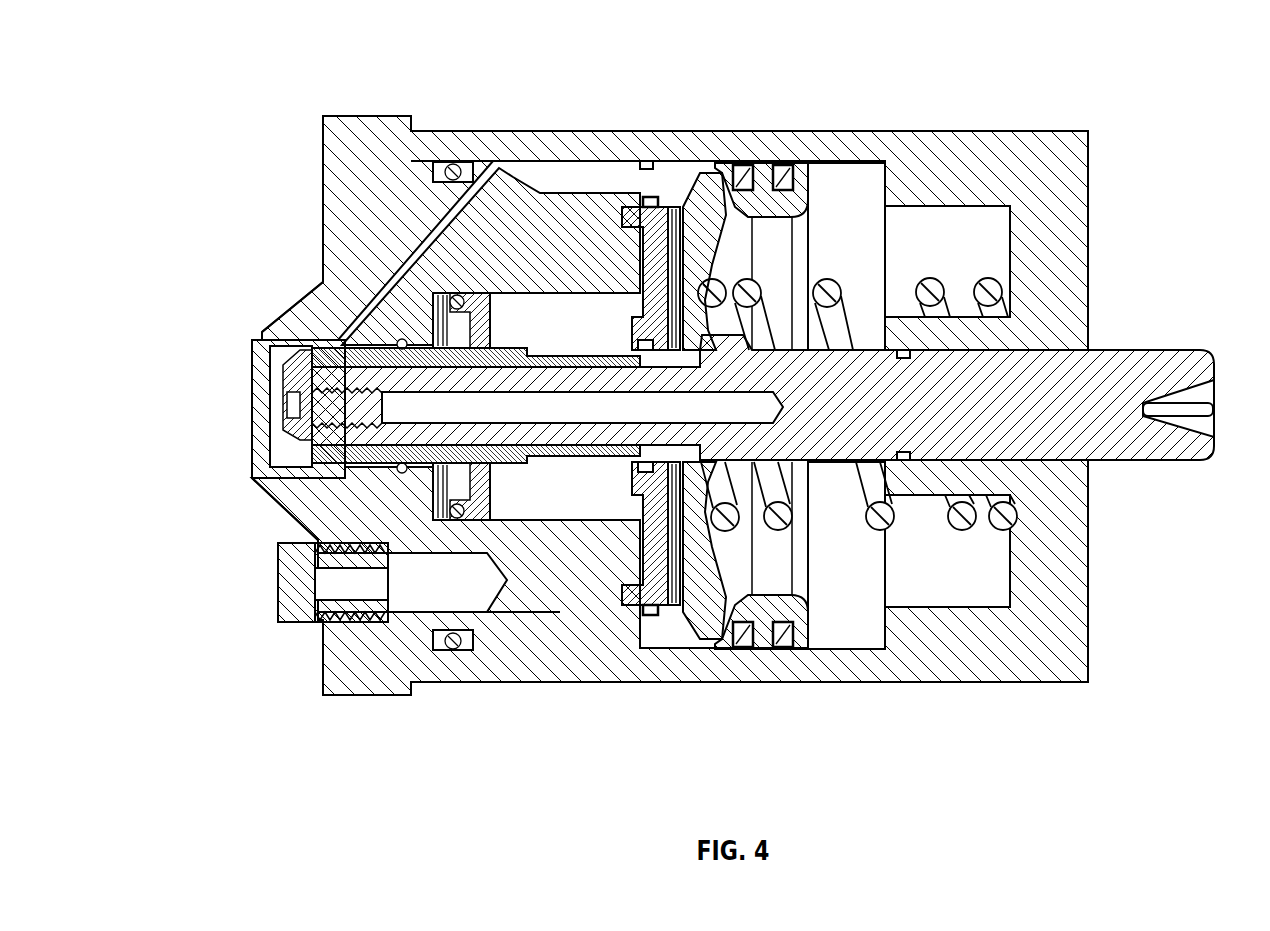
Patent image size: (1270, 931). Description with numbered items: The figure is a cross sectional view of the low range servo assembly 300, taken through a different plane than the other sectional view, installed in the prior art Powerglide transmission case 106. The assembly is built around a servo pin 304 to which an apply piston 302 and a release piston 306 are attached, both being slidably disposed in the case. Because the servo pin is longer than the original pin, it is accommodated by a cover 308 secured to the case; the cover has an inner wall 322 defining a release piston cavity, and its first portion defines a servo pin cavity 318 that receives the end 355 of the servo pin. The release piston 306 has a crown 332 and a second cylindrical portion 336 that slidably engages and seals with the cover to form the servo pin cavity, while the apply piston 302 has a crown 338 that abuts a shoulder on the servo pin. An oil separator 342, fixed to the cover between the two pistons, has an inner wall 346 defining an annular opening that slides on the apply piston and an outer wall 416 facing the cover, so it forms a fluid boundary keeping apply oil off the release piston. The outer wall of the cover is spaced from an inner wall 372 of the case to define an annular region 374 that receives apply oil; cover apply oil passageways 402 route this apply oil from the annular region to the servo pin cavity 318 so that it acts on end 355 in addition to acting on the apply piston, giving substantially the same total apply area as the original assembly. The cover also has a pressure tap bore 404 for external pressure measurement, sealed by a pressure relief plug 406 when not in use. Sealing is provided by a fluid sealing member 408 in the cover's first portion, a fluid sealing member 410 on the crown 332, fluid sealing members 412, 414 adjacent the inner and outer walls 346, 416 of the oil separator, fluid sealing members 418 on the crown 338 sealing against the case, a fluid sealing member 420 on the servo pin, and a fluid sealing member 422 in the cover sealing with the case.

The low range servo assembly 300 is at (1160, 48).
The transmission case 106 is at (455, 140).
The apply piston 302 is at (812, 180).
The servo pin 304 is at (1118, 372).
The release piston 306 is at (456, 528).
The cover 308 is at (388, 130).
The servo pin cavity 318 is at (283, 447).
The inner wall 322 is at (553, 302).
The crown 332 is at (493, 495).
The second cylindrical portion 336 is at (275, 333).
The crown 338 is at (797, 182).
The oil separator 342 is at (676, 178).
The inner wall 346 is at (582, 405).
The end 355 is at (278, 358).
The inner wall 372 is at (522, 642).
The annular region 374 is at (545, 652).
The cover apply oil passageways 402 is at (275, 512).
The pressure tap bore 404 is at (420, 598).
The pressure relief plug 406 is at (278, 565).
The fluid sealing member 408 is at (400, 330).
The fluid sealing member 410 is at (470, 300).
The fluid sealing member 412 is at (638, 492).
The fluid sealing member 414 is at (645, 615).
The outer wall 416 is at (665, 615).
The fluid sealing members 418 is at (742, 165).
The fluid sealing member 420 is at (903, 352).
The fluid sealing member 422 is at (453, 645).